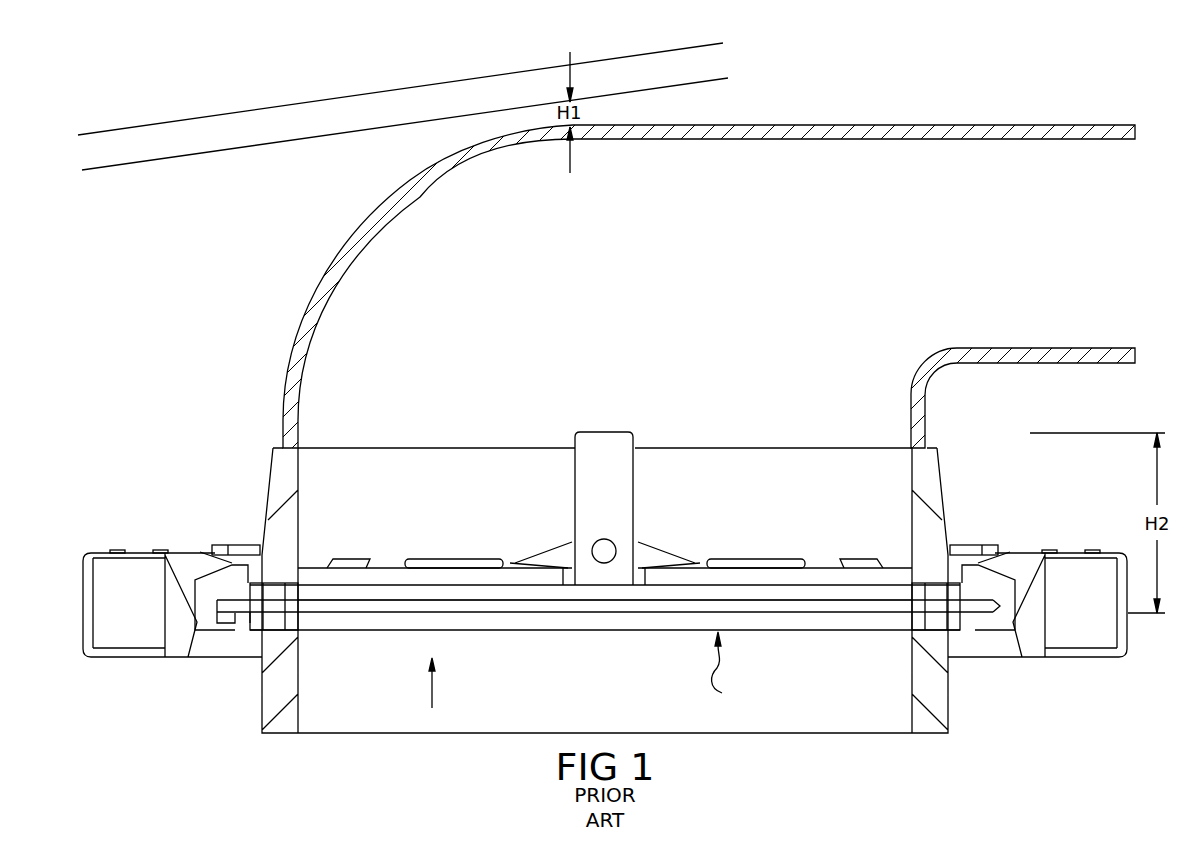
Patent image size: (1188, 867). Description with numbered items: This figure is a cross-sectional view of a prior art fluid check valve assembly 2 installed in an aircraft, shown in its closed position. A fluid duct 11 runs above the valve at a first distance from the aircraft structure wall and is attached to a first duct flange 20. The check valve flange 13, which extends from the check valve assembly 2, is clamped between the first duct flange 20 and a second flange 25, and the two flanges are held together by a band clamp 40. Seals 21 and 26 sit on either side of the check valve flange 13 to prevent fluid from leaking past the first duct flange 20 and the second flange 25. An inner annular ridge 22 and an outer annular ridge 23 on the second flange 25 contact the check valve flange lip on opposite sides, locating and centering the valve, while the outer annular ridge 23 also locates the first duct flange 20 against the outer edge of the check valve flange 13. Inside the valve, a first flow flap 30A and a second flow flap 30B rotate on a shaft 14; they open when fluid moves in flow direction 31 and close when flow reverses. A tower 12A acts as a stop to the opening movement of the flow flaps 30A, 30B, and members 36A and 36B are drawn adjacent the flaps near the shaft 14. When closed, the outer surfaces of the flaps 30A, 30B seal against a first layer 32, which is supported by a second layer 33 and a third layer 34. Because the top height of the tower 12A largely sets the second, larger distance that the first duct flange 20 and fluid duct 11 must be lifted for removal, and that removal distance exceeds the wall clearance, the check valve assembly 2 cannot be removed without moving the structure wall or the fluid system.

The fluid check valve assembly 2 is at (725, 670).
The fluid duct 11 is at (358, 254).
The tower 12A is at (610, 442).
The check valve flange 13 is at (203, 552).
The shaft 14 is at (606, 546).
The first duct flange 20 is at (932, 483).
The seal 21 is at (268, 588).
The inner annular ridge 22 is at (243, 620).
The outer annular ridge 23 is at (208, 655).
The second flange 25 is at (940, 707).
The seal 26 is at (273, 628).
The first flow flap 30A is at (388, 568).
The second flow flap 30B is at (760, 563).
The flow direction 31 is at (433, 688).
The first layer 32 is at (387, 594).
The second layer 33 is at (555, 610).
The third layer 34 is at (621, 623).
The spring member 36A is at (513, 567).
The spring member 36B is at (668, 578).
The band clamp 40 is at (1098, 633).